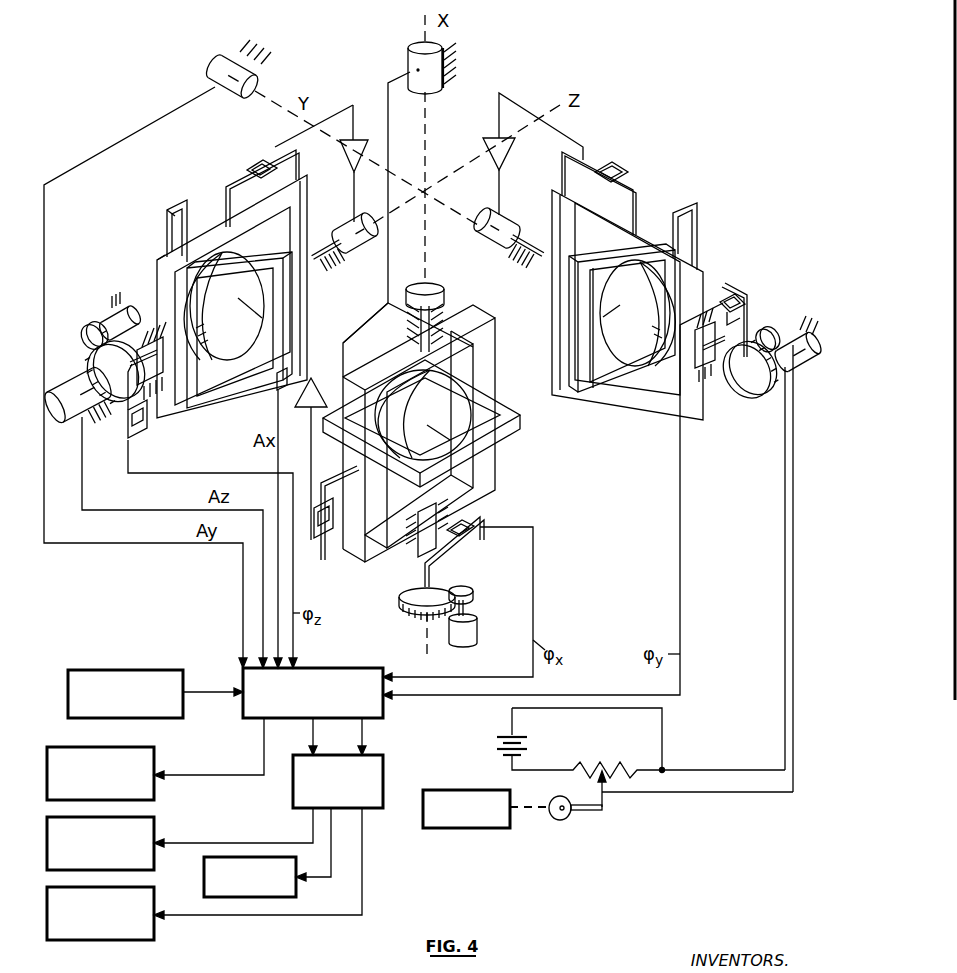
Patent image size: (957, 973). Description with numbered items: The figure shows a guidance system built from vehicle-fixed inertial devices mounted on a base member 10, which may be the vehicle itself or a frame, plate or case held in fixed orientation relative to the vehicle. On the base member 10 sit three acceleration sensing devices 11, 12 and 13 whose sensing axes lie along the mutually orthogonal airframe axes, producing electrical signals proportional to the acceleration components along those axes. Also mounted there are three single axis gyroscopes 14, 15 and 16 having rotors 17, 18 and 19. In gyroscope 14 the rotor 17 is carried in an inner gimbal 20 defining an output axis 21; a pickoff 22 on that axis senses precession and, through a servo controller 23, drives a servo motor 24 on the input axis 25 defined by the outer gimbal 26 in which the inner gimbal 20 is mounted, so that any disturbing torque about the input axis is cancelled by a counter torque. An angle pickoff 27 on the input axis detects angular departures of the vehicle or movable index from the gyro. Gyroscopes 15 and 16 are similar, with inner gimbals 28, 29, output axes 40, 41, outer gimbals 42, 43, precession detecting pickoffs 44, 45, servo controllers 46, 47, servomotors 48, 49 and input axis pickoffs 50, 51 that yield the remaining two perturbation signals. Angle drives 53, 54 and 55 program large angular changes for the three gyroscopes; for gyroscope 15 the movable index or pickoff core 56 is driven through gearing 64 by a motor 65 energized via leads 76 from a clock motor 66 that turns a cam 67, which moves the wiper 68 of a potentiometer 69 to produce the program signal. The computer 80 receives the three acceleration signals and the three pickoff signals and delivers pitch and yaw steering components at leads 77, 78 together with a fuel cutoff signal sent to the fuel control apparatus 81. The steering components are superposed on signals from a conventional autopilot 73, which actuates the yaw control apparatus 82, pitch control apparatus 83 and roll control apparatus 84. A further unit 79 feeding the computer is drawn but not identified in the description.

The base member 10 is at (246, 54).
The acceleration sensing device 11 is at (412, 62).
The acceleration sensing device 12 is at (258, 68).
The acceleration sensing device 13 is at (70, 385).
The single axis gyroscope 14 is at (441, 415).
The single axis gyroscope 15 is at (705, 222).
The single axis gyroscope 16 is at (312, 300).
The rotor 17 is at (427, 420).
The rotor 18 is at (606, 305).
The rotor 19 is at (220, 333).
The inner gimbal 20 is at (522, 418).
The output axis 21 is at (340, 476).
The pickoff 22 is at (317, 542).
The servo controller 23 is at (318, 389).
The servo motor 24 is at (440, 292).
The input axis 25 is at (406, 336).
The outer gimbal 26 is at (493, 337).
The angle pickoff 27 is at (470, 513).
The inner gimbal 28 is at (577, 371).
The inner gimbal 29 is at (276, 386).
The output axis 40 is at (637, 210).
The output axis 41 is at (226, 208).
The outer gimbal 42 is at (663, 399).
The outer gimbal 43 is at (160, 293).
The precession detecting pickoff 44 is at (610, 168).
The precession detecting pickoff 45 is at (258, 165).
The servo controller 46 is at (483, 143).
The servo controller 47 is at (360, 143).
The servomotor 48 is at (482, 233).
The servomotor 49 is at (352, 222).
The input axis pickoff 50 is at (743, 272).
The input axis pickoff 51 is at (150, 422).
The angle drive 53 is at (402, 611).
The angle drive 54 is at (770, 320).
The angle drive 55 is at (104, 320).
The pickoff core 56 is at (724, 300).
The gearing 64 is at (757, 382).
The motor 65 is at (788, 334).
The clock motor 66 is at (424, 803).
The cam 67 is at (562, 820).
The wiper 68 is at (682, 789).
The potentiometer 69 is at (602, 766).
The autopilot 73 is at (298, 788).
The leads 76 is at (733, 792).
The lead 77 is at (362, 735).
The lead 78 is at (313, 735).
The programmer 79 is at (126, 673).
The computer 80 is at (369, 671).
The fuel control apparatus 81 is at (148, 767).
The yaw control apparatus 82 is at (148, 832).
The pitch control apparatus 83 is at (148, 902).
The roll control apparatus 84 is at (296, 886).